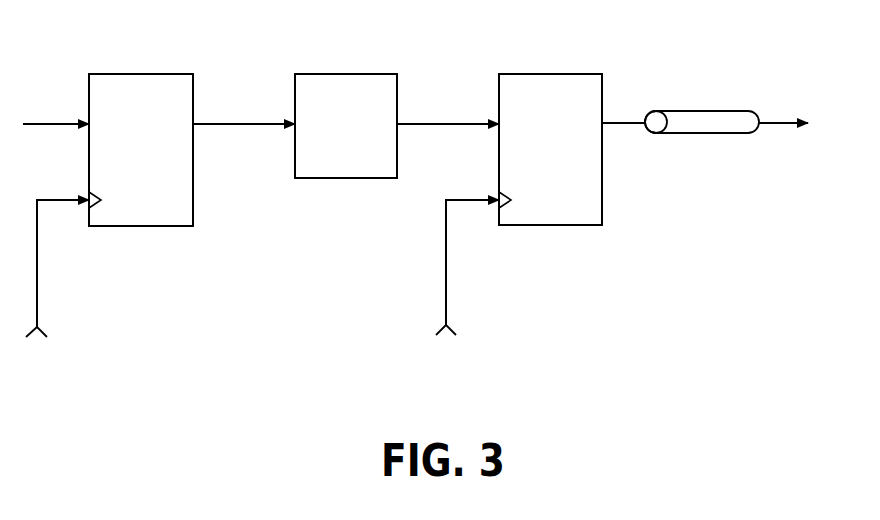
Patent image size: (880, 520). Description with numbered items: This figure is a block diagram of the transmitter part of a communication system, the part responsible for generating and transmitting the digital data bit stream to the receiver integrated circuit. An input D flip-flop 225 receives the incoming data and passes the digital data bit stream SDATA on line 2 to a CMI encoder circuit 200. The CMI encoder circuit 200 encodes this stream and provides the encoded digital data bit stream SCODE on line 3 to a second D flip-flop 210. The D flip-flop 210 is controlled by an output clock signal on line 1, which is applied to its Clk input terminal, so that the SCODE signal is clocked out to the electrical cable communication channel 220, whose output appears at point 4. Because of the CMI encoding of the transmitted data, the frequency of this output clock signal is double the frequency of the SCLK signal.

The first D flip-flop 225 is at (161, 74).
The CMI encoder circuit 200 is at (355, 74).
The D flip-flop 210 is at (563, 74).
The electrical cable communication channel 220 is at (728, 111).
The output clock signal line 1 is at (57, 268).
The SDATA line 2 is at (244, 102).
The SCODE line 3 is at (448, 102).
The output signal point 4 is at (809, 128).